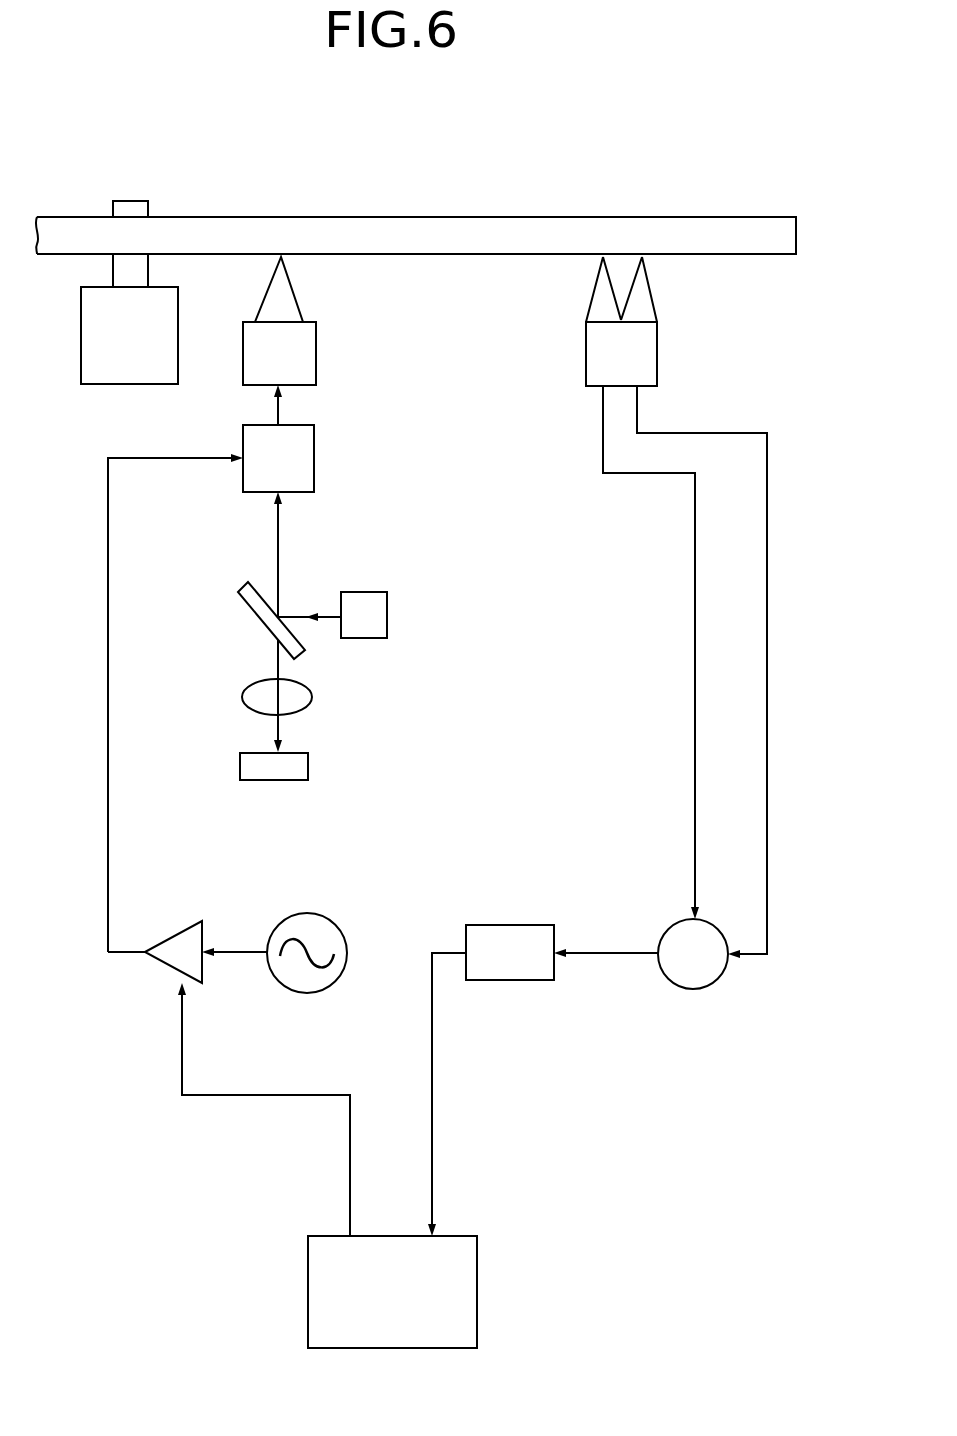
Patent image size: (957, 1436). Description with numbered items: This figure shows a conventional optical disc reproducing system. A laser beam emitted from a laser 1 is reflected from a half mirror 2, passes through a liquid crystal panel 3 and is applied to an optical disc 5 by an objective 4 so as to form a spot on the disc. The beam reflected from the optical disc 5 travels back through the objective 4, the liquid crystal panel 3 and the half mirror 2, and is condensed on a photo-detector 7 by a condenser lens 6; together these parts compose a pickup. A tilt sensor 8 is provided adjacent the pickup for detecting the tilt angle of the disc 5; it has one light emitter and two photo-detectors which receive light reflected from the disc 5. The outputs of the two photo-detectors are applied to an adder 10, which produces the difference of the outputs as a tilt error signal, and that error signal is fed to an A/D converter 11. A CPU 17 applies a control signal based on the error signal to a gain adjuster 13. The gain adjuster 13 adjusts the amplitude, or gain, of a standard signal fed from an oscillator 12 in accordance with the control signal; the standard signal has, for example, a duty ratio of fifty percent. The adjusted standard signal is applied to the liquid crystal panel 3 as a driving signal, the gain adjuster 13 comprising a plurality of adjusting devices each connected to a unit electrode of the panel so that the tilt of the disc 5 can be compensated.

The laser 1 is at (378, 612).
The half mirror 2 is at (262, 588).
The liquid crystal panel 3 is at (300, 447).
The objective 4 is at (300, 353).
The optical disc 5 is at (607, 225).
The condenser lens 6 is at (302, 693).
The photo-detector 7 is at (302, 768).
The tilt sensor 8 is at (595, 346).
The adder 10 is at (688, 990).
The A/D converter 11 is at (505, 985).
The oscillator 12 is at (293, 915).
The gain adjuster 13 is at (183, 923).
The CPU 17 is at (310, 1296).